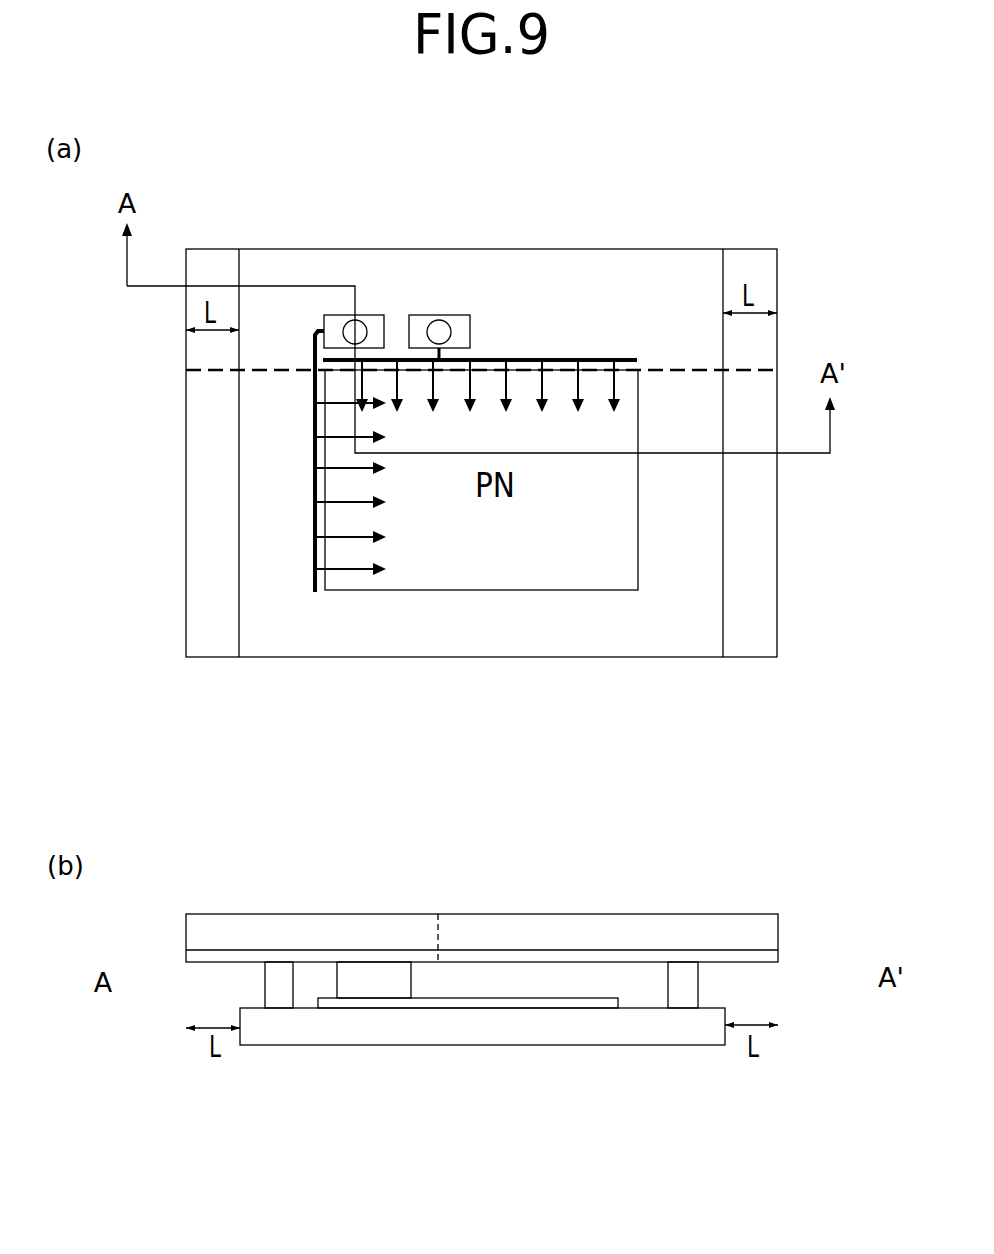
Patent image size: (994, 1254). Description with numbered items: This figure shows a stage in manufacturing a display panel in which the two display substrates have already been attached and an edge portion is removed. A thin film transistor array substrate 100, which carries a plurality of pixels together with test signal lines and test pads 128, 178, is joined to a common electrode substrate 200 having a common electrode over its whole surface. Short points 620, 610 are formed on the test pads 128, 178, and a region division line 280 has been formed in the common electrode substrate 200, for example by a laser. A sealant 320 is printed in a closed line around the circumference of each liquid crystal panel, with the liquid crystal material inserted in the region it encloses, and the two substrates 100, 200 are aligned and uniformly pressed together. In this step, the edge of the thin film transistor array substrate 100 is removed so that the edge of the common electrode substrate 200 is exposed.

The short point 620 is at (343, 326).
The test pad 128 is at (368, 314).
The short point 610 is at (429, 320).
The test pad 178 is at (457, 314).
The region division line 280 is at (748, 368).
The common electrode substrate 200 is at (778, 930).
The thin film transistor array substrate 100 is at (240, 1013).
The sealant 320 is at (280, 990).